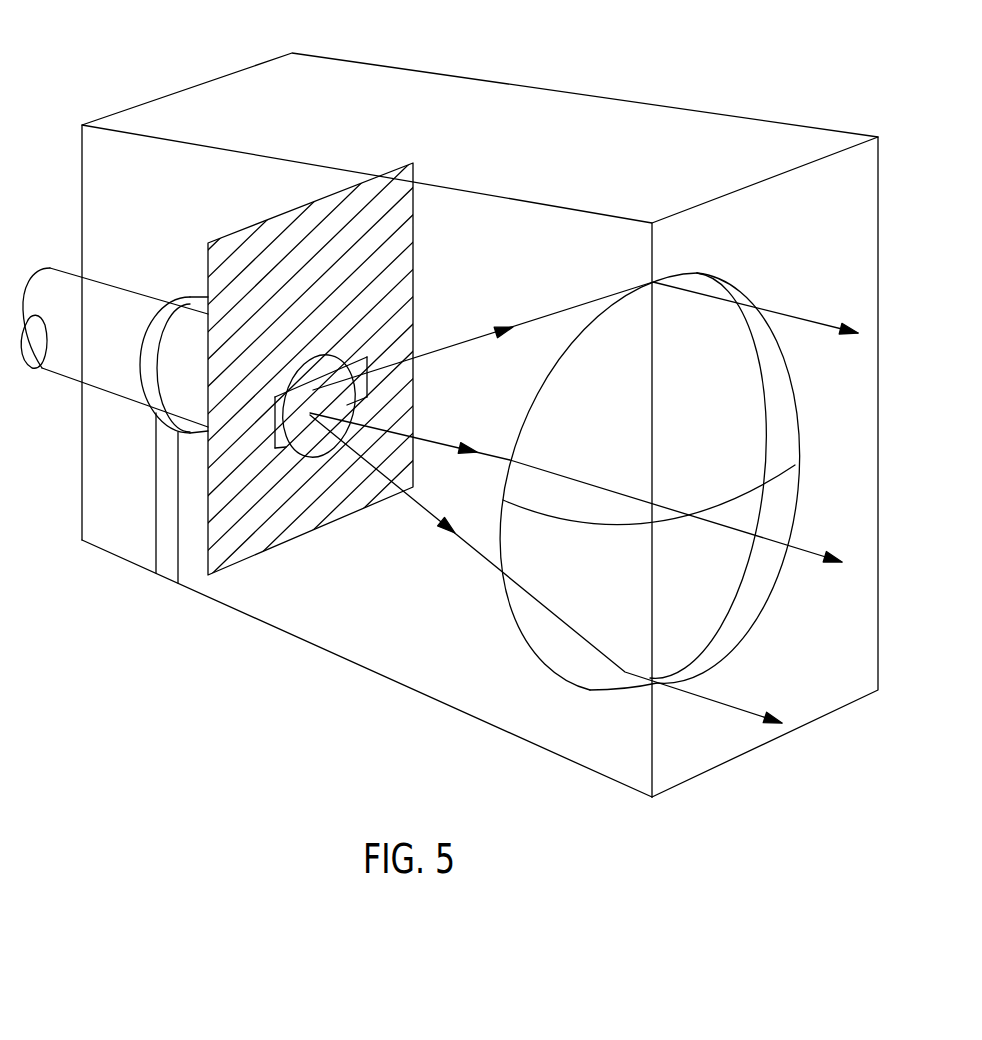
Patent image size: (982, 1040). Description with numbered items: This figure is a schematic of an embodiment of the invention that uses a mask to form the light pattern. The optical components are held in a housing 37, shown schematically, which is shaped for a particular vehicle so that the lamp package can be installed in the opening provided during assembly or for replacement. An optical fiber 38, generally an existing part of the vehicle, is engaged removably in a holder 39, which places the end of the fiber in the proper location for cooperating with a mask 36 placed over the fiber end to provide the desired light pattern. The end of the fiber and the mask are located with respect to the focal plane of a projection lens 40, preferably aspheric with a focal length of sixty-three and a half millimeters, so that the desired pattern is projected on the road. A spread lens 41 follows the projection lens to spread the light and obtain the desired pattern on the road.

The mask 36 is at (395, 196).
The housing 37 is at (240, 612).
The optical fiber 38 is at (107, 375).
The holder 39 is at (160, 413).
The projection lens 40 is at (627, 318).
The spread lens 41 is at (689, 748).